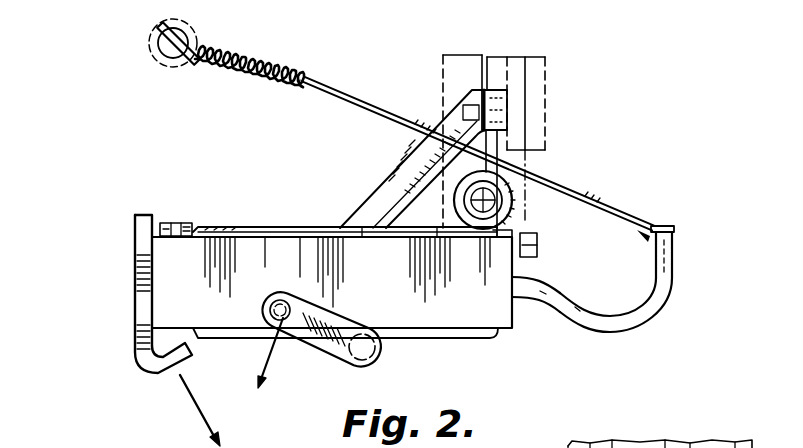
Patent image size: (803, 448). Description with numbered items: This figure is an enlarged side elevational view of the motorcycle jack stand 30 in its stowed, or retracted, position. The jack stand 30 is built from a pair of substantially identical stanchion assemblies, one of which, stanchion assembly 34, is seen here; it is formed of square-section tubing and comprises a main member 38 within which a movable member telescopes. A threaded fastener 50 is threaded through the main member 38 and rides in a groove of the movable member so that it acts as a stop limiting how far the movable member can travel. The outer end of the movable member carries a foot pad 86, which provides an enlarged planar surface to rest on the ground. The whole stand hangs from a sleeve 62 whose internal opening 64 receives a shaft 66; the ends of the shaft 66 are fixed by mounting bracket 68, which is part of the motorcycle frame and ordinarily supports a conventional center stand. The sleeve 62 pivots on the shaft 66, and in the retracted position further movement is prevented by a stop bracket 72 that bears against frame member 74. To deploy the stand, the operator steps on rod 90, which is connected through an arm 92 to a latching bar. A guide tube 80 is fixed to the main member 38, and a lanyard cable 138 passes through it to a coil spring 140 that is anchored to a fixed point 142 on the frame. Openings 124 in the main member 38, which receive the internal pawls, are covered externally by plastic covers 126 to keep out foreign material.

The jack stand 30 is at (592, 140).
The stanchion assembly 34 is at (520, 333).
The main member 38 is at (480, 300).
The threaded fastener 50 is at (180, 221).
The sleeve 62 is at (510, 212).
The internal opening 64 is at (500, 195).
The shaft 66 is at (498, 222).
The mounting bracket 68 is at (455, 75).
The stop bracket 72 is at (378, 195).
The member 74 is at (535, 92).
The guide tube 80 is at (667, 267).
The foot pad 86 is at (137, 318).
The rod 90 is at (300, 340).
The arm 92 is at (343, 360).
The openings 124 is at (700, 442).
The covers 126 is at (310, 227).
The cable 138 is at (603, 203).
The coil spring 140 is at (234, 77).
The fixed point 142 is at (167, 48).